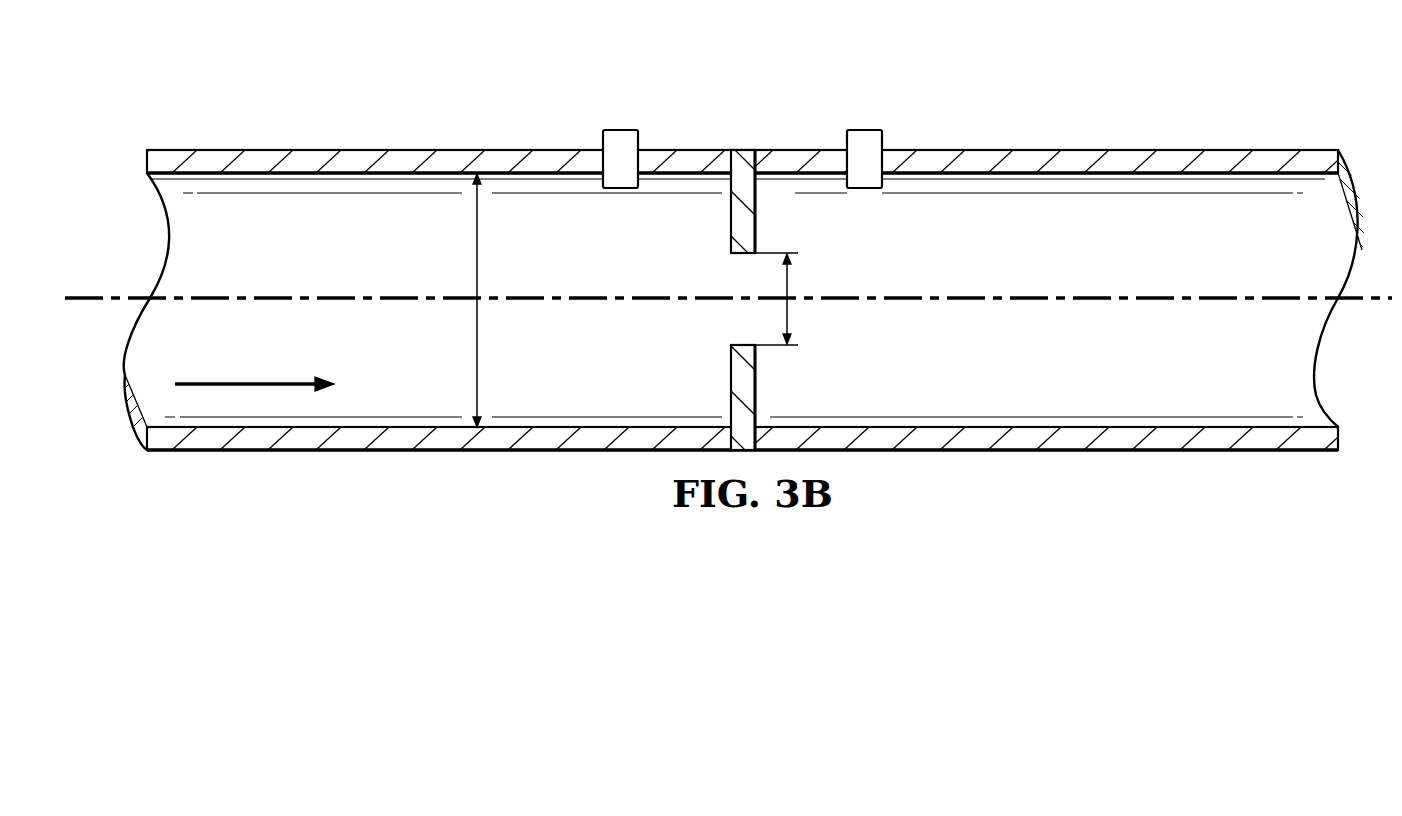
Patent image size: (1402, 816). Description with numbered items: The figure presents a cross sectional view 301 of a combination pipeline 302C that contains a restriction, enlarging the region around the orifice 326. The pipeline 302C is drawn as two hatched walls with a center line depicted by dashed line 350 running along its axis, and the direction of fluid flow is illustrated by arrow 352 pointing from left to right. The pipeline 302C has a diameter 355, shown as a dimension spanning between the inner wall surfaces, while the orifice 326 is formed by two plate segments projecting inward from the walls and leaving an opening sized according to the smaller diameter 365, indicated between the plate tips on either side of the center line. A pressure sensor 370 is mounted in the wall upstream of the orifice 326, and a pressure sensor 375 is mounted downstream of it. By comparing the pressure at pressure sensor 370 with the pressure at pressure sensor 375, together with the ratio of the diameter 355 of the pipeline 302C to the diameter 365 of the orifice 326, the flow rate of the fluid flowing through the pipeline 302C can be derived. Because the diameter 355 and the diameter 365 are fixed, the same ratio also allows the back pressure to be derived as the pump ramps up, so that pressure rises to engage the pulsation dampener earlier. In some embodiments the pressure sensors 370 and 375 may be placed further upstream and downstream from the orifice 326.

The cross sectional view 301 is at (1041, 89).
The combination pipeline 302C is at (310, 163).
The orifice 326 is at (730, 215).
The center line 350 is at (80, 297).
The arrow 352 is at (243, 381).
The diameter 355 is at (476, 257).
The diameter 365 is at (790, 281).
The pressure sensor 370 is at (620, 129).
The pressure sensor 375 is at (866, 129).